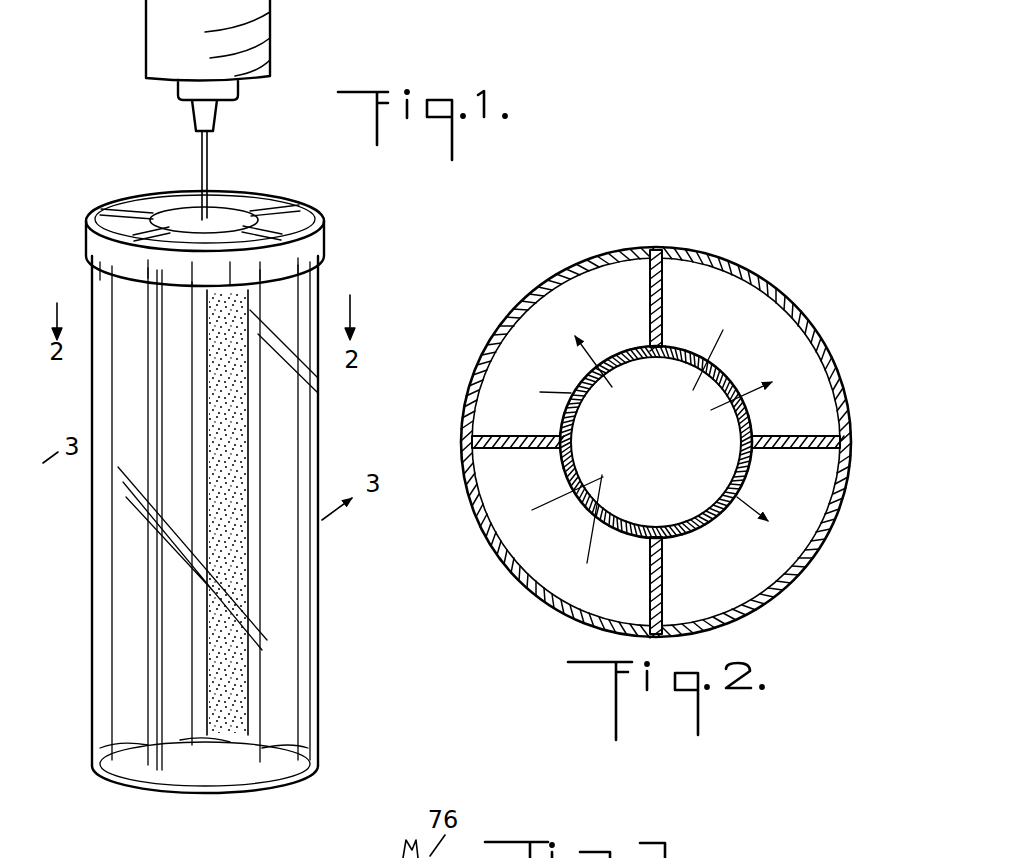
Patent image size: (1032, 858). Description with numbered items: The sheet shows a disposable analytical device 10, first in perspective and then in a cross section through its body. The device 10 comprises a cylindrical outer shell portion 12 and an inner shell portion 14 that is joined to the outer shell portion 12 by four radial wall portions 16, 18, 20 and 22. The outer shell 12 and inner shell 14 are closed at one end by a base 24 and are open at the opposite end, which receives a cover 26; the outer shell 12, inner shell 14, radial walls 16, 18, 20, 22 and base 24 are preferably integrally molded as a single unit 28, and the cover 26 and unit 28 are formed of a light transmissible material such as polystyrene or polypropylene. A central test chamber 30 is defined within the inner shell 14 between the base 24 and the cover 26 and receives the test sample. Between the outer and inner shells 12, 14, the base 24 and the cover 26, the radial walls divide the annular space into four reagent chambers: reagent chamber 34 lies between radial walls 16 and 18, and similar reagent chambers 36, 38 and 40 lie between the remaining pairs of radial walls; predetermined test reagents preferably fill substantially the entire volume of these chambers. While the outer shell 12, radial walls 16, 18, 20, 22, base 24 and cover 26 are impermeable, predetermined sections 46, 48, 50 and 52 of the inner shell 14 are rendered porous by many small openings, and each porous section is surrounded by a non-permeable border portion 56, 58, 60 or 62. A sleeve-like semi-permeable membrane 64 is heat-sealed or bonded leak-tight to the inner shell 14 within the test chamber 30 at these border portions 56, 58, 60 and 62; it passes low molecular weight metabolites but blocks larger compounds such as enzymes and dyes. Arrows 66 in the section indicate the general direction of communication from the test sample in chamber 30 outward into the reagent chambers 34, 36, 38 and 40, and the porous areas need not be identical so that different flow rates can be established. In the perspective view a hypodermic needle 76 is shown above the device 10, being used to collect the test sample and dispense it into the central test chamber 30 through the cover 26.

In FIG. 1, the disposable analytical device 10 is at (88, 195).
In FIG. 1, the cylindrical outer shell portion 12 is at (332, 276).
In FIG. 2, the cylindrical outer shell portion 12 is at (781, 294).
In FIG. 1, the inner shell portion 14 is at (208, 764).
In FIG. 2, the inner shell portion 14 is at (674, 344).
In FIG. 1, the radial wall portion 16 is at (286, 466).
In FIG. 2, the radial wall portion 16 is at (846, 412).
In FIG. 1, the radial wall portion 18 is at (178, 778).
In FIG. 2, the radial wall portion 18 is at (664, 608).
In FIG. 1, the radial wall portion 20 is at (130, 718).
In FIG. 2, the radial wall portion 20 is at (474, 430).
In FIG. 1, the radial wall portion 22 is at (248, 210).
In FIG. 2, the radial wall portion 22 is at (668, 272).
In FIG. 1, the base 24 is at (255, 782).
In FIG. 2, the base 24 is at (634, 262).
In FIG. 1, the cover 26 is at (330, 225).
In FIG. 1, the unit 28 is at (324, 428).
In FIG. 2, the unit 28 is at (834, 347).
In FIG. 2, the central test chamber 30 is at (644, 439).
In FIG. 2, the reagent chamber 34 is at (754, 569).
In FIG. 2, the reagent chamber 36 is at (542, 557).
In FIG. 2, the reagent chamber 38 is at (526, 361).
In FIG. 2, the reagent chamber 40 is at (759, 366).
In FIG. 1, the porous section 46 is at (217, 709).
In FIG. 2, the porous section 46 is at (742, 488).
In FIG. 2, the porous section 48 is at (612, 562).
In FIG. 2, the porous section 50 is at (610, 353).
In FIG. 2, the porous section 52 is at (746, 408).
In FIG. 1, the non-permeable border portion 56 is at (226, 768).
In FIG. 2, the non-permeable border portion 56 is at (752, 458).
In FIG. 2, the non-porous section 58 is at (642, 540).
In FIG. 2, the non-porous section 60 is at (557, 428).
In FIG. 2, the non-porous section 62 is at (724, 328).
In FIG. 2, the semi-permeable membrane 64 is at (607, 447).
In FIG. 2, the arrows 66 is at (717, 562).
In FIG. 1, the hypodermic needle 76 is at (270, 34).